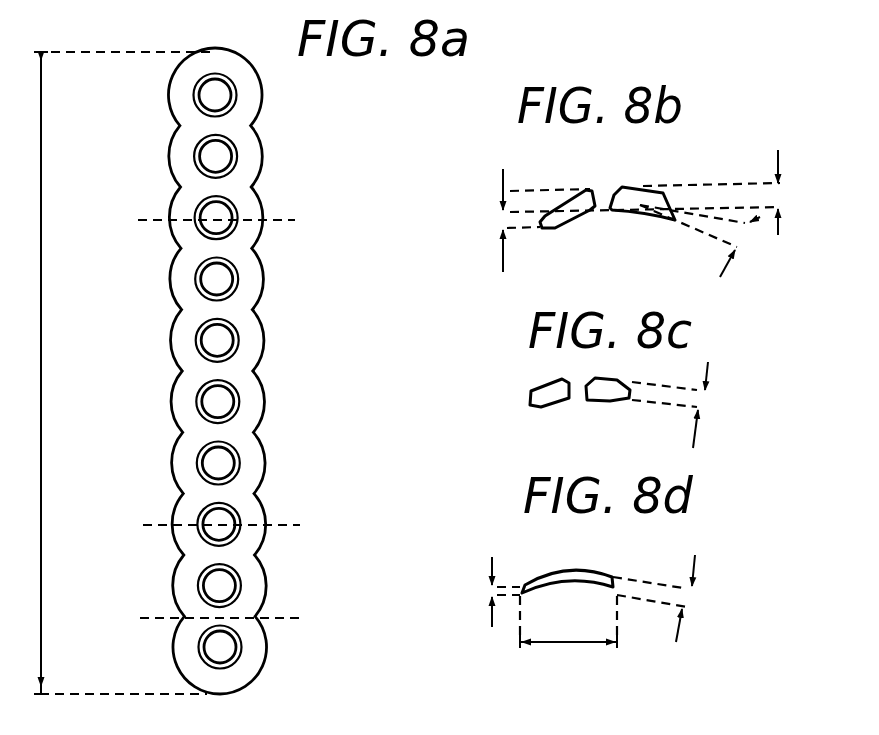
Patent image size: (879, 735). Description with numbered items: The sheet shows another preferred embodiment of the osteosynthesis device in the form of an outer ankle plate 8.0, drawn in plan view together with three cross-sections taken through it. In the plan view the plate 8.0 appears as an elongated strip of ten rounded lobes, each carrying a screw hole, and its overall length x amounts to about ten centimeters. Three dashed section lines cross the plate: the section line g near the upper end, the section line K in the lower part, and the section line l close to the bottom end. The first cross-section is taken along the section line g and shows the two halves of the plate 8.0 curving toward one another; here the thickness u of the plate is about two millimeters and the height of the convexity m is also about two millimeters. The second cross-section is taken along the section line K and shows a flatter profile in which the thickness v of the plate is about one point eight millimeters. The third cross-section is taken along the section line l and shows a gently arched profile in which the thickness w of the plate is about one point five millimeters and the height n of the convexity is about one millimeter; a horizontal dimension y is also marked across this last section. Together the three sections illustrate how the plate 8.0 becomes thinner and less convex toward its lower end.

In FIG. 8a, the outer ankle plate 8.0 is at (248, 354).
In FIG. 8a, the length of the plate x is at (122, 373).
In FIG. 8a, the section line gg g is at (210, 225).
In FIG. 8a, the section line kk K is at (219, 526).
In FIG. 8a, the section line ll l is at (216, 617).
In FIG. 8b, the height of the convexity m is at (500, 213).
In FIG. 8b, the thickness of the plate u is at (782, 198).
In FIG. 8c, the thickness of the plate v is at (703, 400).
In FIG. 8d, the height of the convexity n is at (493, 588).
In FIG. 8d, the thickness of the plate w is at (688, 597).
In FIG. 8d, the width dimension y is at (567, 643).